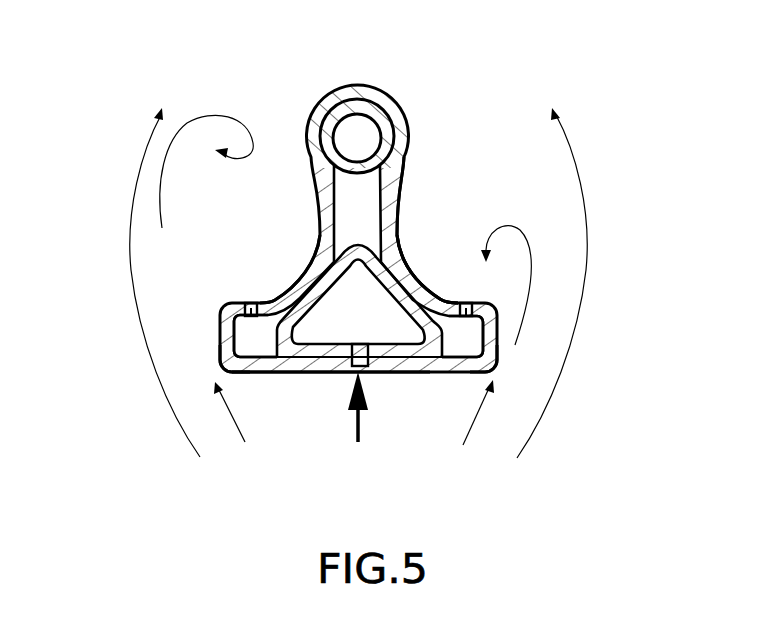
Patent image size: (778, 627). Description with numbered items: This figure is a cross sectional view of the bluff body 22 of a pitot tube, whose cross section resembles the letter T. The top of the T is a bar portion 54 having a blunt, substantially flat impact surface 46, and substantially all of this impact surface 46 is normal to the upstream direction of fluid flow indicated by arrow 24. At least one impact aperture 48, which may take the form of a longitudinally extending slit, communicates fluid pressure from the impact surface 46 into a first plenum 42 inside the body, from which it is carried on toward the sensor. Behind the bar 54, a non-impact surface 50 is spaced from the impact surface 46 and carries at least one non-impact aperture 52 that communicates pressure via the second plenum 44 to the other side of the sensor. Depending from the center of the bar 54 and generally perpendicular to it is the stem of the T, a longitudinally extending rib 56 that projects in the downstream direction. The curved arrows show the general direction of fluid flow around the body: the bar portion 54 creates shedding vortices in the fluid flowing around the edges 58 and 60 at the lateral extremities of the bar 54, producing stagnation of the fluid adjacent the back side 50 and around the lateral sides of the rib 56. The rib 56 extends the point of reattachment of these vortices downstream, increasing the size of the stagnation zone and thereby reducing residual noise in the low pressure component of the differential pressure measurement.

The bluff body 22 is at (451, 108).
The arrow indicating upstream direction of fluid flow 24 is at (140, 300).
The first plenum 42 is at (348, 283).
The second plenum 44 is at (243, 342).
The impact surface 46 is at (397, 370).
The impact aperture 48 is at (352, 362).
The non-impact surface 50 is at (282, 293).
The non-impact aperture 52 is at (250, 303).
The bar portion 54 is at (263, 384).
The rib 56 is at (412, 213).
The edge of lateral extremity of bar 58 is at (498, 370).
The edge of lateral extremity of bar 60 is at (228, 370).